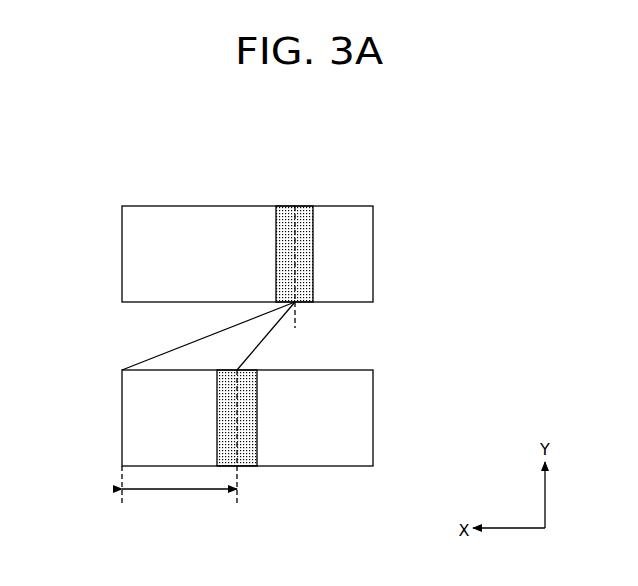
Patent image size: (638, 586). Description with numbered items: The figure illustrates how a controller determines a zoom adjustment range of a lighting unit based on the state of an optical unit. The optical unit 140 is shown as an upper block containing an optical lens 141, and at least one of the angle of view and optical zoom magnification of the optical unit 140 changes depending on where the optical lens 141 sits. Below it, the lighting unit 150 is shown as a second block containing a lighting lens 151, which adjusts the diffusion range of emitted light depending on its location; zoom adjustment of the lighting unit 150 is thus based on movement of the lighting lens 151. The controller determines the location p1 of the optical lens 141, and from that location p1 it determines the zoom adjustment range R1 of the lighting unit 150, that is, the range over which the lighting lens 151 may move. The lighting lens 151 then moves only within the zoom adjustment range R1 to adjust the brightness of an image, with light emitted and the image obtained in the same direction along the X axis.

The optical unit 140 is at (122, 253).
The optical lens 141 is at (286, 213).
The lighting unit 150 is at (122, 418).
The lighting lens 151 is at (247, 450).
The location of the optical lens p1 is at (214, 336).
The zoom adjustment range R1 is at (179, 491).